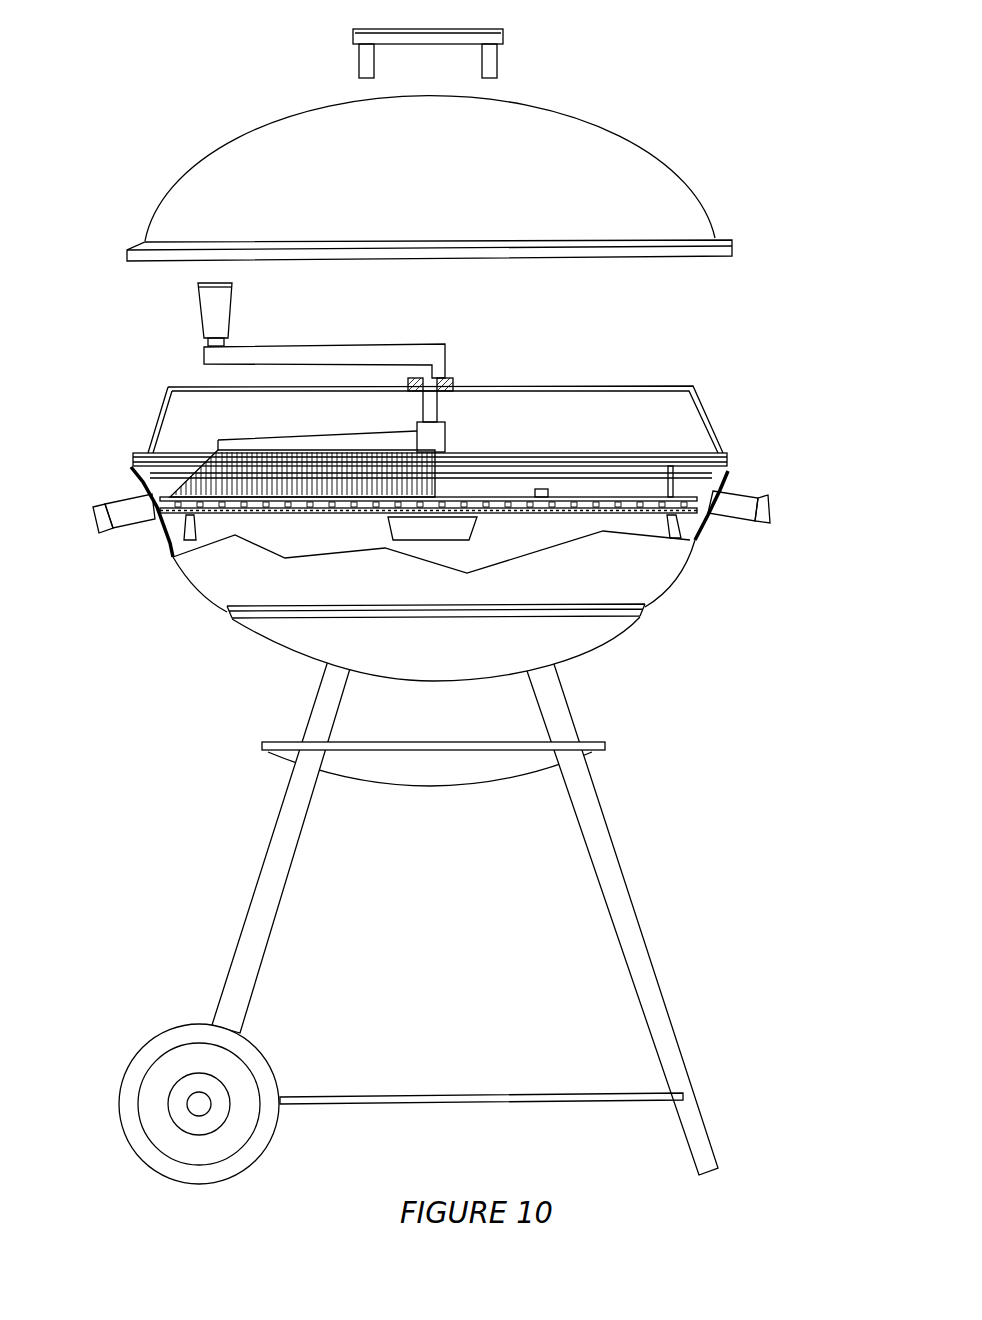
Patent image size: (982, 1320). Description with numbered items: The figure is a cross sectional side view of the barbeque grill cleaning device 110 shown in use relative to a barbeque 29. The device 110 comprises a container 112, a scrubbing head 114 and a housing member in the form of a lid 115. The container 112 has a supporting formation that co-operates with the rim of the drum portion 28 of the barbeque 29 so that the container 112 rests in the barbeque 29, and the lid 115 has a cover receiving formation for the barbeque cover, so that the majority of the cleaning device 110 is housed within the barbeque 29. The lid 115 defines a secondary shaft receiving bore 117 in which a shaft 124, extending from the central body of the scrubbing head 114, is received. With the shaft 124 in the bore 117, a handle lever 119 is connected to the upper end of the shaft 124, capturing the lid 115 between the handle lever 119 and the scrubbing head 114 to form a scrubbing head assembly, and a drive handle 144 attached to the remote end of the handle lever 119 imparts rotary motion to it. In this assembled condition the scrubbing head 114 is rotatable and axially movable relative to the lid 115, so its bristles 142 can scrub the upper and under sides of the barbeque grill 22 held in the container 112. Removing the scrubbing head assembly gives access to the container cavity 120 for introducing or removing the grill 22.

The barbeque grill cleaning device 110 is at (158, 362).
The container 112 is at (156, 520).
The scrubbing head 114 is at (227, 445).
The lid 115 is at (698, 400).
The secondary shaft receiving bore 117 is at (452, 377).
The handle lever 119 is at (293, 350).
The container cavity 120 is at (697, 484).
The shaft 124 is at (437, 403).
The bristles 142 is at (148, 496).
The drive handle 144 is at (210, 313).
The barbeque grill 22 is at (643, 512).
The drum portion 28 is at (601, 636).
The barbeque 29 is at (647, 975).